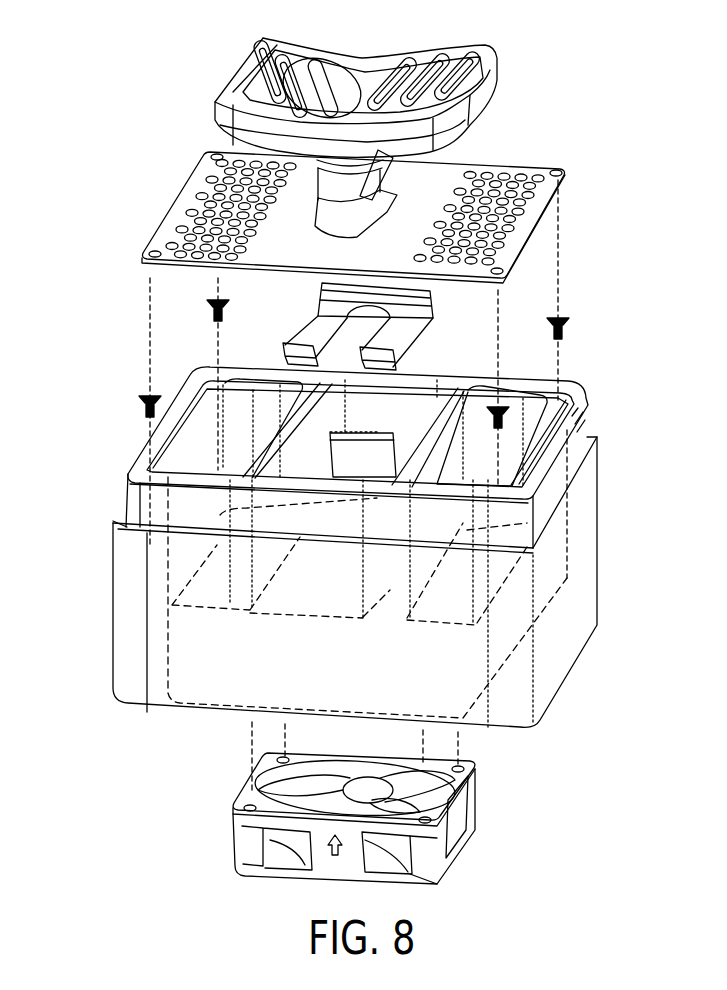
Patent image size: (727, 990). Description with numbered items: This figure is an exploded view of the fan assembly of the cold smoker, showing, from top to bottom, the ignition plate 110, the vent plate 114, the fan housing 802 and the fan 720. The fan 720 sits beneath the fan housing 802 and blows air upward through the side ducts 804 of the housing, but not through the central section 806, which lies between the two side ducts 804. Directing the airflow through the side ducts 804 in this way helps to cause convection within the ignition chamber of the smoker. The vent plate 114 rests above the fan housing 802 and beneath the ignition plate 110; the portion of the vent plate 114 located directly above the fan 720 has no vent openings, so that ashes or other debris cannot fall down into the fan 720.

The ignition plate 110 is at (252, 86).
The vent plate 114 is at (160, 240).
The fan housing 802 is at (167, 507).
The side ducts 804 is at (513, 427).
The central section 806 is at (393, 433).
The fan 720 is at (247, 792).